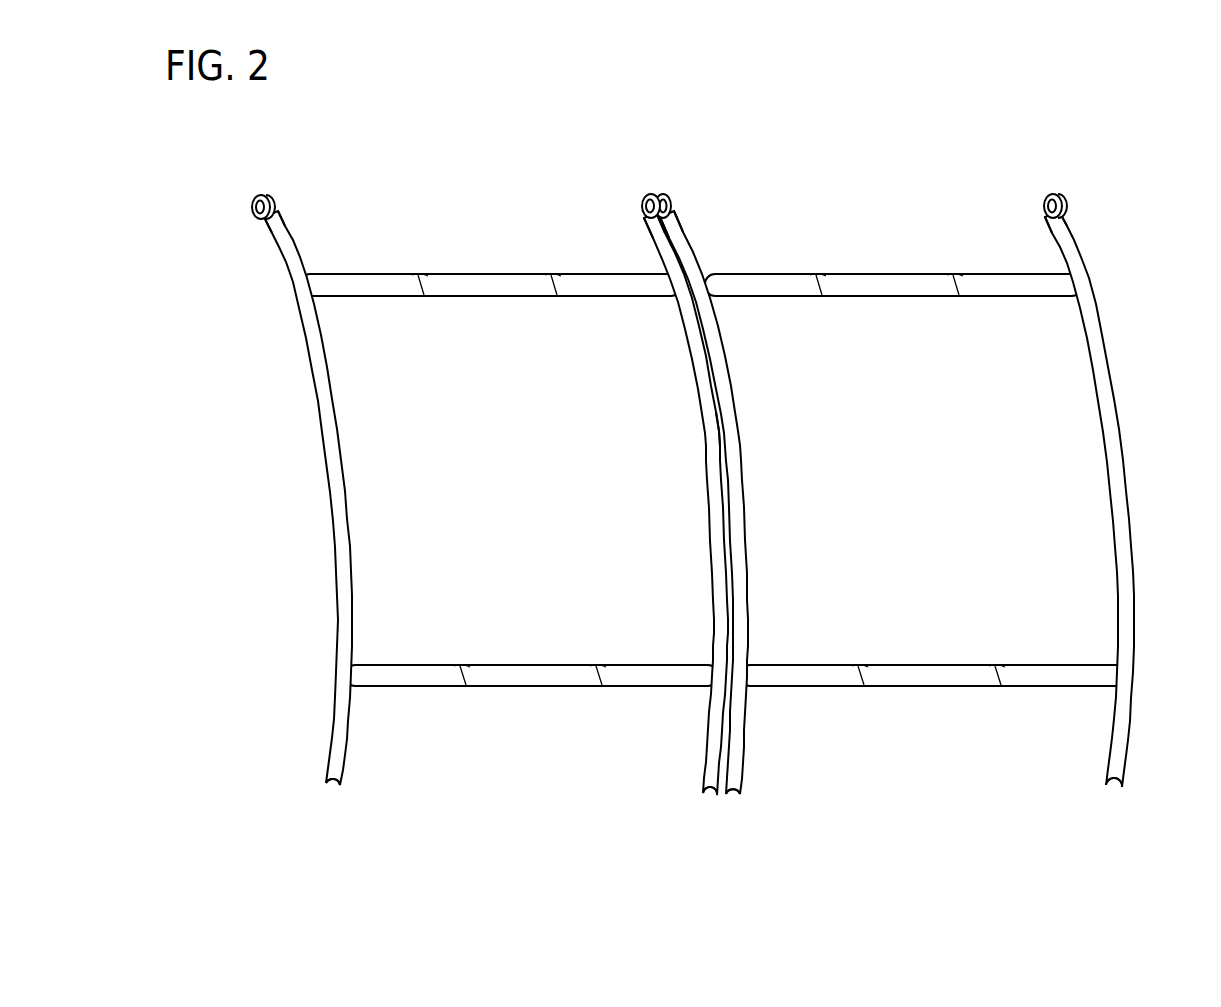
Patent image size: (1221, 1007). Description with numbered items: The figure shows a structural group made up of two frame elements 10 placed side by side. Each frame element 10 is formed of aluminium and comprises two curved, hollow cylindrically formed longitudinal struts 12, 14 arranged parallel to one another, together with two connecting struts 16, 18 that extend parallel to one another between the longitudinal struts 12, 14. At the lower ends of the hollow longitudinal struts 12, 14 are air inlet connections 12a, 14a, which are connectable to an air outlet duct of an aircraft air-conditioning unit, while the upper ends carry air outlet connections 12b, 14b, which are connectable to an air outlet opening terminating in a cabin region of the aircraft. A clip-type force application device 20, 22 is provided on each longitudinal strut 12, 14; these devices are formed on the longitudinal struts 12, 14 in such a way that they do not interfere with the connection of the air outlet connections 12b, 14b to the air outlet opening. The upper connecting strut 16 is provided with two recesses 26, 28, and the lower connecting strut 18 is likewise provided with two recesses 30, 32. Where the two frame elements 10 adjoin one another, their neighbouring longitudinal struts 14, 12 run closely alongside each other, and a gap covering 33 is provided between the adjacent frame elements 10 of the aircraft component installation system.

The frame element 10 is at (262, 271).
The longitudinal strut 12 is at (281, 221).
The air inlet connection 12a is at (331, 796).
The air outlet connection 12b is at (252, 206).
The longitudinal strut 14 is at (650, 223).
The air inlet connection 14a is at (708, 802).
The air outlet connection 14b is at (647, 206).
The connecting strut 16 is at (489, 277).
The connecting strut 18 is at (524, 688).
The clip-type force application device 20 is at (263, 194).
The clip-type force application device 22 is at (654, 194).
The recess 26 is at (421, 280).
The recess 28 is at (552, 280).
The recess 30 is at (463, 666).
The recess 32 is at (599, 666).
The gap covering 33 is at (726, 418).